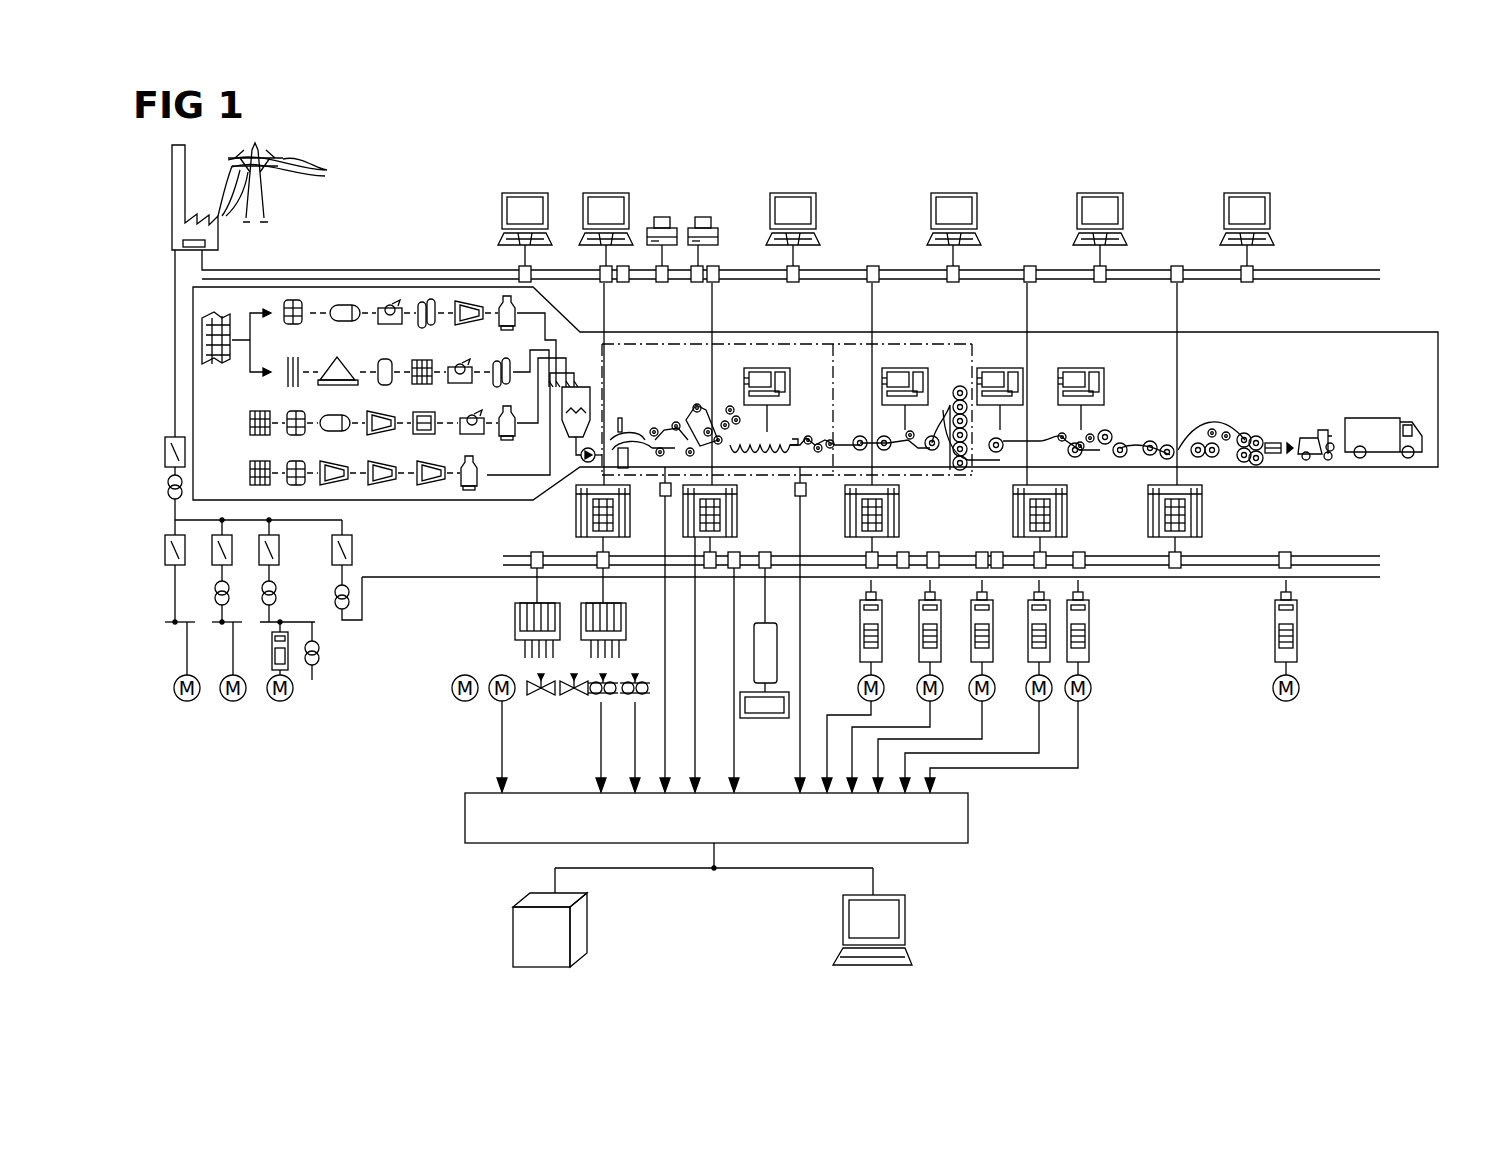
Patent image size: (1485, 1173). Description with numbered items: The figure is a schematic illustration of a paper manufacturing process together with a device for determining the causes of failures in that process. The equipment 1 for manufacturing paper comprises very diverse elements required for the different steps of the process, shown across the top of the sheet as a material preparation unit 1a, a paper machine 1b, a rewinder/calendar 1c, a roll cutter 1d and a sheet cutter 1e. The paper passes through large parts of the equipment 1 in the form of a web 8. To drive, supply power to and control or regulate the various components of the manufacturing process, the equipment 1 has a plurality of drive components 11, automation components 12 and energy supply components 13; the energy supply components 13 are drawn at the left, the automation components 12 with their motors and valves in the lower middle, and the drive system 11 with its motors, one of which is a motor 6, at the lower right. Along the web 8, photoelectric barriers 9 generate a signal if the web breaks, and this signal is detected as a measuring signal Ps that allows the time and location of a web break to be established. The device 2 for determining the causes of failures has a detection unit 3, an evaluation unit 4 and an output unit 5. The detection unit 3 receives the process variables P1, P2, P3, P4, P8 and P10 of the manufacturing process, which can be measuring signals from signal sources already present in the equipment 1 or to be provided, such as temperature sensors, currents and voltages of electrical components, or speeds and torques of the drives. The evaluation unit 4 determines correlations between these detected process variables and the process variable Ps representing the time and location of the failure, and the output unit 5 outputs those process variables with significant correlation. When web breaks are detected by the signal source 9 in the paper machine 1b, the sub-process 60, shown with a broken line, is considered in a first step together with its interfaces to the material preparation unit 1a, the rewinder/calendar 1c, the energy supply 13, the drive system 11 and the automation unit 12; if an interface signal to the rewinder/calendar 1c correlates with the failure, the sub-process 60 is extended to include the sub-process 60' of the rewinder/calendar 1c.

The equipment 1 is at (1372, 195).
The material preparation unit 1a is at (280, 192).
The paper machine 1b is at (659, 200).
The rewinder/calendar 1c is at (949, 200).
The roll cutter 1d is at (1100, 200).
The sheet cutter 1e is at (1247, 200).
The device 2 is at (408, 890).
The detection unit 3 is at (470, 817).
The evaluation unit 4 is at (520, 935).
The output unit 5 is at (895, 920).
The electric motor drive 6 is at (1092, 688).
The web 8 is at (800, 437).
The photoelectric barrier 9 is at (655, 496).
The drive components 11 is at (1160, 805).
The automation components 12 is at (405, 700).
The energy supply components 13 is at (188, 745).
The sub-process 60 is at (787, 383).
The sub-process of the rewinder/calendar 60' is at (930, 383).
The process variable P1 is at (500, 733).
The process variable P2 is at (600, 714).
The process variable P3 is at (634, 742).
The process variable P4 is at (698, 742).
The process variable P8 is at (984, 720).
The process variable P10 is at (1080, 727).
The measuring signal Ps is at (665, 600).